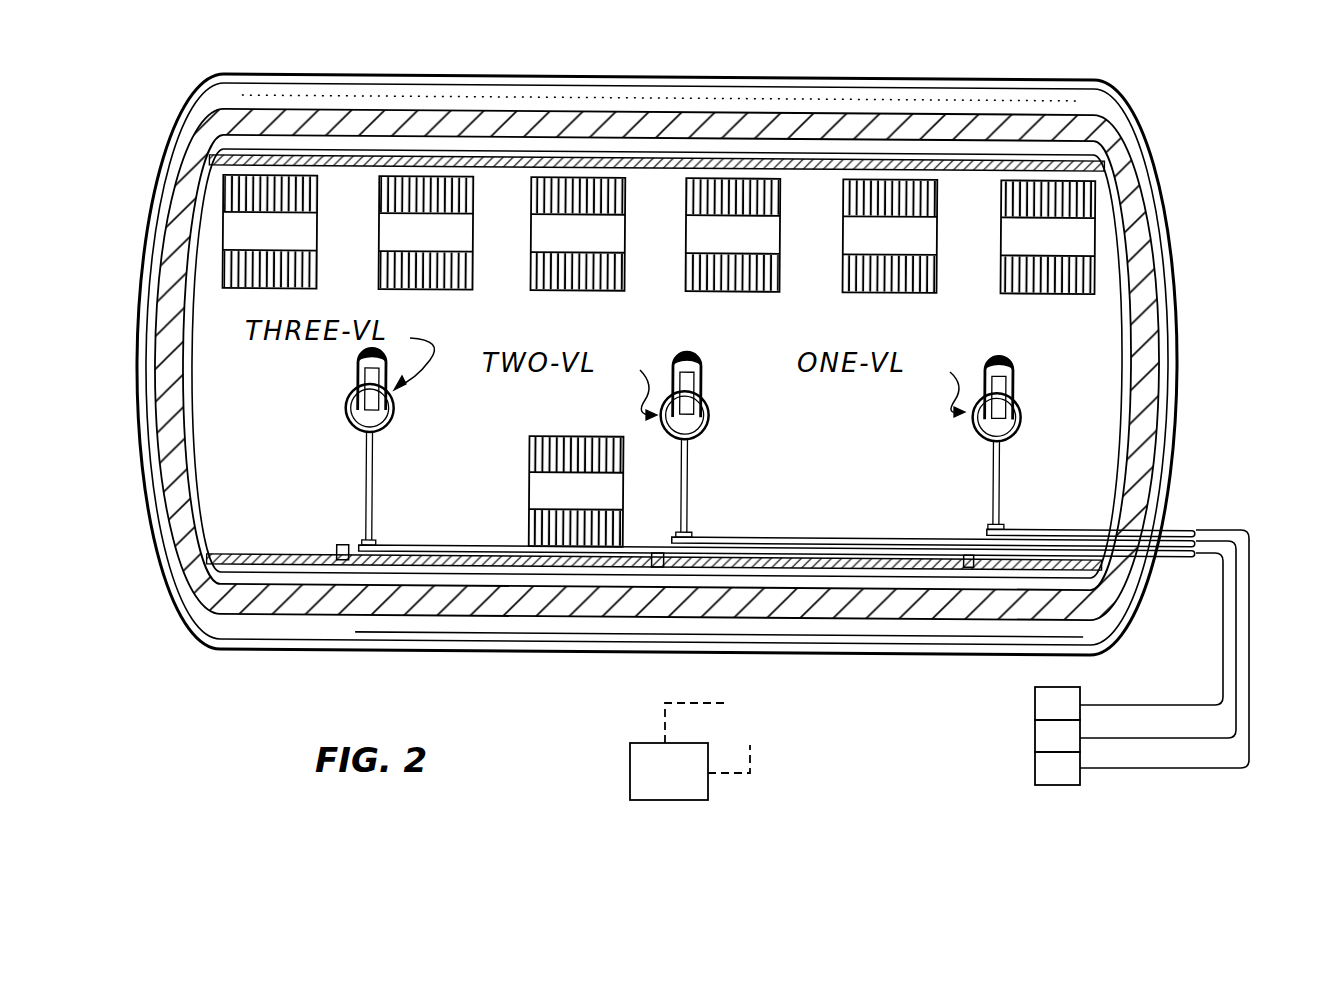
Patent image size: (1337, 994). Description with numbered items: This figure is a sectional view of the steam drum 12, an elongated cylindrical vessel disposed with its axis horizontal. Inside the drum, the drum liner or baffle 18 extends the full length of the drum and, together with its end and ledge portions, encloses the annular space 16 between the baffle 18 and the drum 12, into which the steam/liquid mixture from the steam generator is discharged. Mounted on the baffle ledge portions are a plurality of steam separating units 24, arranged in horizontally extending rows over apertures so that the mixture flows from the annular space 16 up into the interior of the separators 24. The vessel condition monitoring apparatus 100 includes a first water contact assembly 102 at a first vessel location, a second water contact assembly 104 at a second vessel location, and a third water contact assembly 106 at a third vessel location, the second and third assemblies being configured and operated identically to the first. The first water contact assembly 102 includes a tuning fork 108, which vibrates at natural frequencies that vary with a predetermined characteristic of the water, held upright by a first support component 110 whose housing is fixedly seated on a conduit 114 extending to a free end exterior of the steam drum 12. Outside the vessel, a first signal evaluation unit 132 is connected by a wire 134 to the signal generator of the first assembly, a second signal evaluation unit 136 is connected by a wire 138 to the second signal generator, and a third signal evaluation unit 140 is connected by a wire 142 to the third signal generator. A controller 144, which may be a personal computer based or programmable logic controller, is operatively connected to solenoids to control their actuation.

The steam drum 12 is at (712, 78).
The annular space 16 is at (815, 150).
The baffle 18 is at (667, 172).
The steam separating units 24 is at (257, 292).
The vessel condition monitoring apparatus 100 is at (1208, 636).
The first water contact assembly 102 is at (997, 438).
The second water contact assembly 104 is at (712, 418).
The third water contact assembly 106 is at (395, 418).
The tuning fork 108 is at (1010, 372).
The first support component 110 is at (980, 432).
The conduit 114 is at (815, 537).
The first signal evaluation unit 132 is at (1035, 766).
The wire 134 is at (1140, 772).
The second signal evaluation unit 136 is at (1035, 736).
The wire 138 is at (1178, 740).
The third signal evaluation unit 140 is at (1035, 703).
The wire 142 is at (1193, 710).
The controller 144 is at (688, 790).